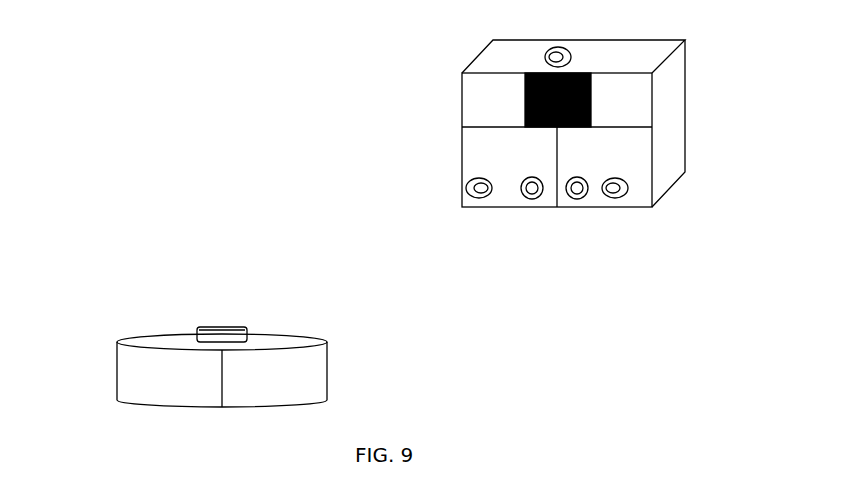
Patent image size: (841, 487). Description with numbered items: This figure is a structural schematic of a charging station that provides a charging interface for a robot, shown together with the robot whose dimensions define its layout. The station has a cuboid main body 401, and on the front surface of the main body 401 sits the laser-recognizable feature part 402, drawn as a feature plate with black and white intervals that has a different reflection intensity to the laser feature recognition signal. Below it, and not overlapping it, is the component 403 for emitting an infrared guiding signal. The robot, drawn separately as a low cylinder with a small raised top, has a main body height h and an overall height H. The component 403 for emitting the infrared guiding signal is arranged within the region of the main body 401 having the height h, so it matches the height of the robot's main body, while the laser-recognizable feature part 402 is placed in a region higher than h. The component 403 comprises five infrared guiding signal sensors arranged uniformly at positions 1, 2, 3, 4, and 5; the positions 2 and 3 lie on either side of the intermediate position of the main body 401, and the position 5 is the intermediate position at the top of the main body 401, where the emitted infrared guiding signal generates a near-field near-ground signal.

The main body 401 is at (685, 147).
The laser-recognizable feature part 402 is at (425, 100).
The component for emitting an infrared guiding signal 403 is at (652, 212).
The position of infrared sensor 1 is at (479, 181).
The position of infrared sensor 2 is at (532, 179).
The position of infrared sensor 3 is at (577, 179).
The position of infrared sensor 4 is at (615, 178).
The position of infrared sensor 5 is at (568, 57).
The height of the main body of the robot h is at (435, 165).
The overall height of the robot H is at (197, 328).